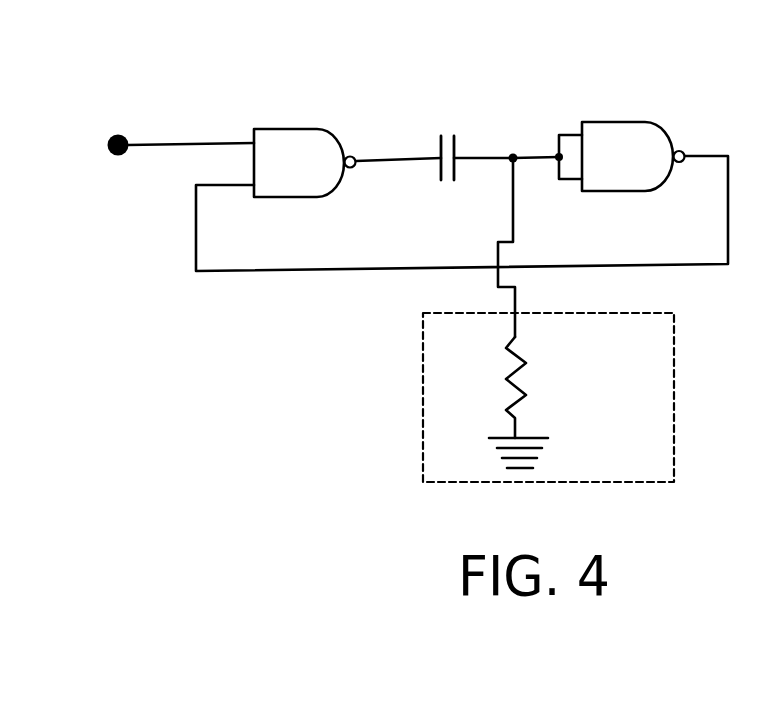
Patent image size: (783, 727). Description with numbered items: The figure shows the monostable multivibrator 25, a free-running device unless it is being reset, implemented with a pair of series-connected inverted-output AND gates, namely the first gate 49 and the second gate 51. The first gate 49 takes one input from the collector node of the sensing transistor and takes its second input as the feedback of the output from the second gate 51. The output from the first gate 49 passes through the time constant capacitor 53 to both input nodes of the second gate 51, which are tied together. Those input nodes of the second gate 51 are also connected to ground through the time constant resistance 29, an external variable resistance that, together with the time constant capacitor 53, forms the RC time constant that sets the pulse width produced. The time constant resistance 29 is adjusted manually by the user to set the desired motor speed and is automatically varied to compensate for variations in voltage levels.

The monostable multivibrator 25 is at (372, 373).
The first gate 49 is at (283, 129).
The second gate 51 is at (630, 122).
The time constant capacitor 53 is at (448, 100).
The time constant resistance 29 is at (674, 370).